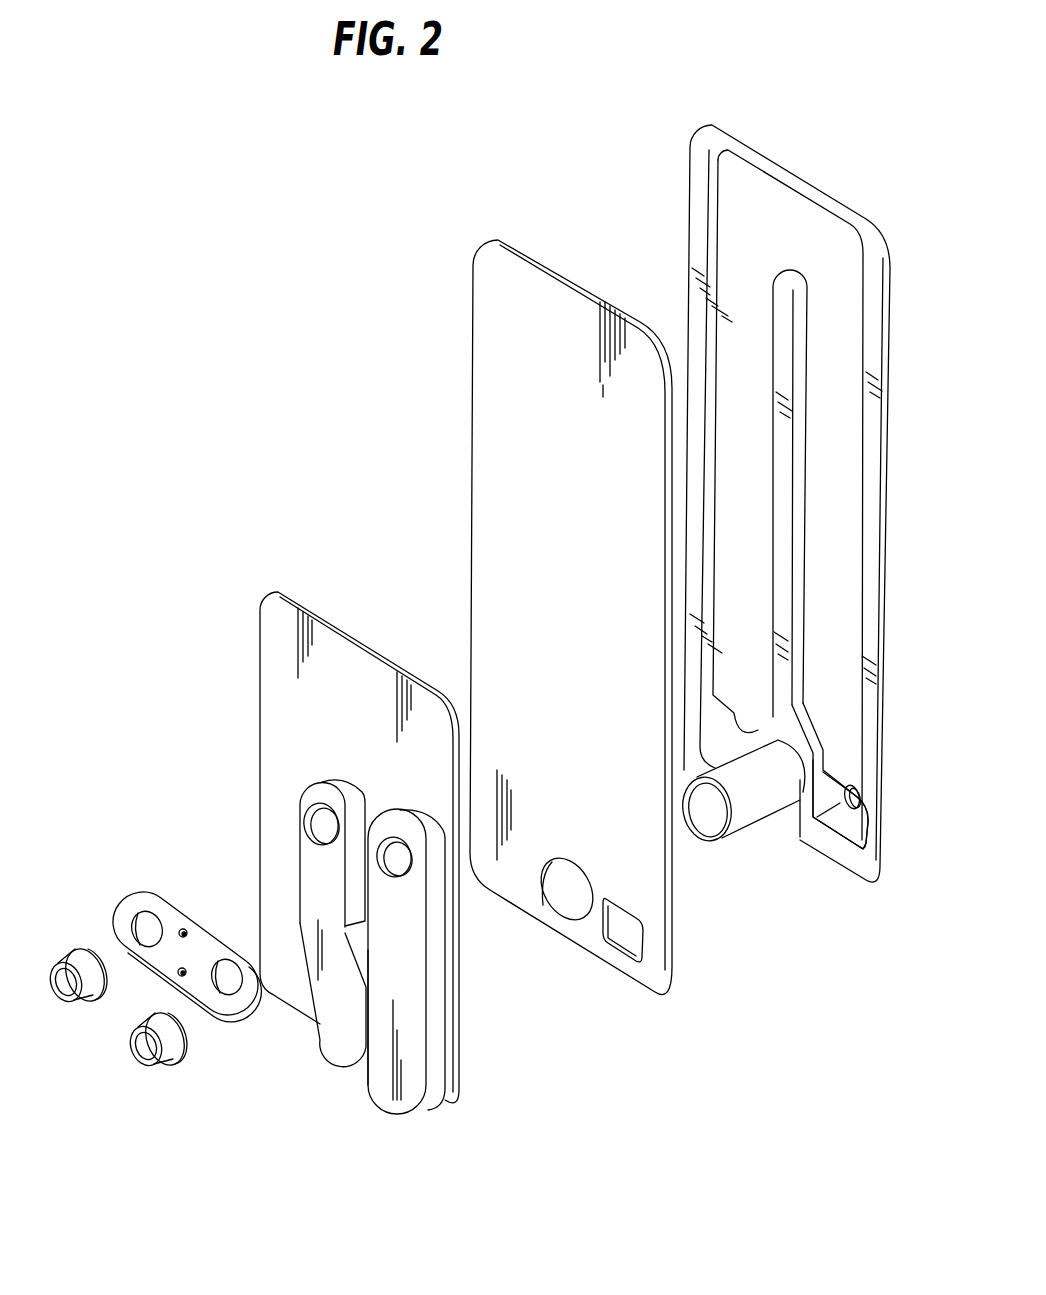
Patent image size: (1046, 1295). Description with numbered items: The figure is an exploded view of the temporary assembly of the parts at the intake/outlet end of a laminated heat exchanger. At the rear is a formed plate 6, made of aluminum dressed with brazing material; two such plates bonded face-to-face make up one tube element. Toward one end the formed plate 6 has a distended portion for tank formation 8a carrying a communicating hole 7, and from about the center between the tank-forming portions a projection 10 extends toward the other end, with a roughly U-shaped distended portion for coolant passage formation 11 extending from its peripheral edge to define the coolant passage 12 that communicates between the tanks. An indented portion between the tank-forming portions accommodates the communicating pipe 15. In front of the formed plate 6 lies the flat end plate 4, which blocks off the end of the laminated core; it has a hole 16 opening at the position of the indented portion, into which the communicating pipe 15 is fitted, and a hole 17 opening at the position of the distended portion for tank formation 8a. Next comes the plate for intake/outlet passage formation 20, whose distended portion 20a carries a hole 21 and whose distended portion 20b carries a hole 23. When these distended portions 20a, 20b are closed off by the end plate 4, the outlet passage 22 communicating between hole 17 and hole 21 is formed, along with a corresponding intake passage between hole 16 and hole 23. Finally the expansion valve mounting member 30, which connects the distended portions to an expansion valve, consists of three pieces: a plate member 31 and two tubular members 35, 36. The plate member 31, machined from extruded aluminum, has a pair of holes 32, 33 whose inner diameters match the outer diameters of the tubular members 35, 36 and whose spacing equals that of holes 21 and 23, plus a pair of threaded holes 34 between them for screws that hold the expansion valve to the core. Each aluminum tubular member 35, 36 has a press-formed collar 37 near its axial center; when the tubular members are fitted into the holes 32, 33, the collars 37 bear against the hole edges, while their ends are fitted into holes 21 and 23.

The end plate 4 is at (592, 308).
The formed plate 6 is at (851, 190).
The communicating hole 7 is at (873, 843).
The distended portion for tank formation 8a is at (847, 827).
The projection 10 is at (777, 470).
The distended portion for coolant passage formation 11 is at (843, 340).
The coolant passage 12 is at (785, 810).
The communicating pipe 15 is at (750, 803).
The hole 16 is at (572, 900).
The hole 17 is at (628, 933).
The plate for intake/outlet passage formation 20 is at (338, 650).
The distended portion 20a is at (407, 1095).
The distended portion 20b is at (338, 1043).
The hole 21 is at (397, 867).
The outlet passage 22 is at (407, 1020).
The hole 23 is at (320, 823).
The expansion valve mounting member 30 is at (128, 859).
The plate member 31 is at (170, 915).
The hole 32 is at (228, 1010).
The hole 33 is at (137, 903).
The threaded holes 34 is at (184, 930).
The tubular member 35 is at (166, 1066).
The tubular member 36 is at (87, 1002).
The collar 37 is at (70, 947).